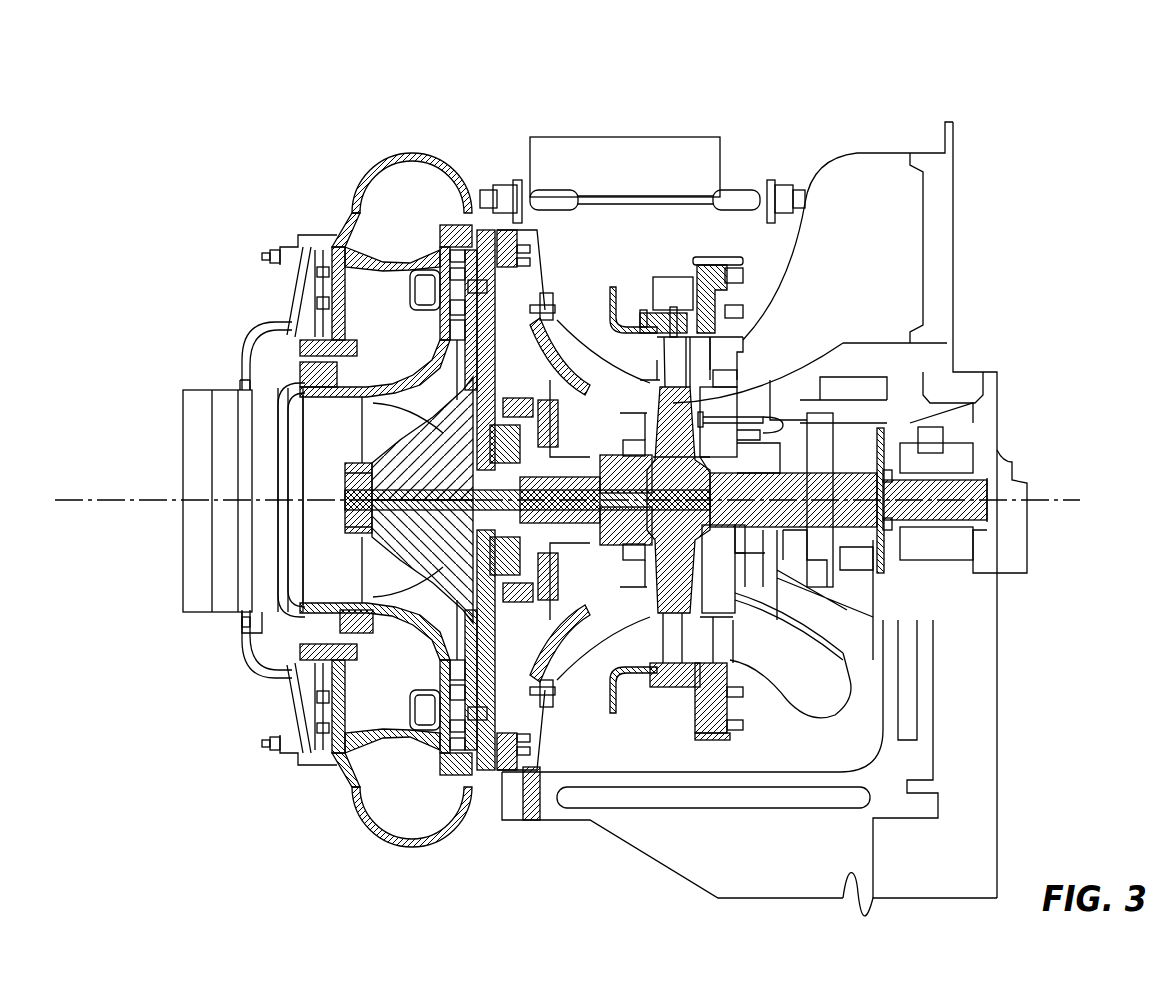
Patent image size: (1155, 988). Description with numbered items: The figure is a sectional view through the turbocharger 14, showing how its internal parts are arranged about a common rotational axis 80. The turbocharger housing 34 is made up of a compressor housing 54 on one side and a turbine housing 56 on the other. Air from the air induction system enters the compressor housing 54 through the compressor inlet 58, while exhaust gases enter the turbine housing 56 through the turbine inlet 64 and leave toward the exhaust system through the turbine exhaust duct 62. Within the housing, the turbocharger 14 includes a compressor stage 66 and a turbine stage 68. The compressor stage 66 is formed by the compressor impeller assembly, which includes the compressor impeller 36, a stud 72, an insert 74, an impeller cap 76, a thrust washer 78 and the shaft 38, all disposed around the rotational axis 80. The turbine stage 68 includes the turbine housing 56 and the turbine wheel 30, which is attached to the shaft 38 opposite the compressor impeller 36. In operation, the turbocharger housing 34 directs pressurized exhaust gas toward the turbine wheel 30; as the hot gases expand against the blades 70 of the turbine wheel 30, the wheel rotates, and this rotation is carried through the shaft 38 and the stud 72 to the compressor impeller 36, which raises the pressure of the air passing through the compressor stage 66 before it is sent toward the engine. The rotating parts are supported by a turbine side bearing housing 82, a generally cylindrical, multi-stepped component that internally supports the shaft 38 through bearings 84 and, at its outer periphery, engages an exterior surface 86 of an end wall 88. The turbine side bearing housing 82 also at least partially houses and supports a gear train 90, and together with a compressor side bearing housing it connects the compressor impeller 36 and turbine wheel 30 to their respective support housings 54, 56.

The turbocharger 14 is at (252, 219).
The turbine wheel 30 is at (757, 373).
The turbocharger housing 34 is at (720, 160).
The compressor impeller 36 is at (403, 463).
The shaft 38 is at (588, 530).
The compressor housing 54 is at (352, 171).
The turbine housing 56 is at (827, 138).
The compressor inlet 58 is at (190, 578).
The turbine exhaust duct 62 is at (623, 137).
The turbine inlet 64 is at (953, 205).
The compressor stage 66 is at (421, 141).
The turbine stage 68 is at (851, 72).
The blades 70 is at (673, 637).
The stud 72 is at (305, 608).
The insert 74 is at (337, 327).
The impeller cap 76 is at (395, 620).
The thrust washer 78 is at (653, 540).
The rotational axis 80 is at (1053, 500).
The turbine side bearing housing 82 is at (940, 376).
The bearings 84 is at (833, 523).
The exterior surface 86 is at (890, 372).
The end wall 88 is at (910, 420).
The gear train 90 is at (1012, 459).